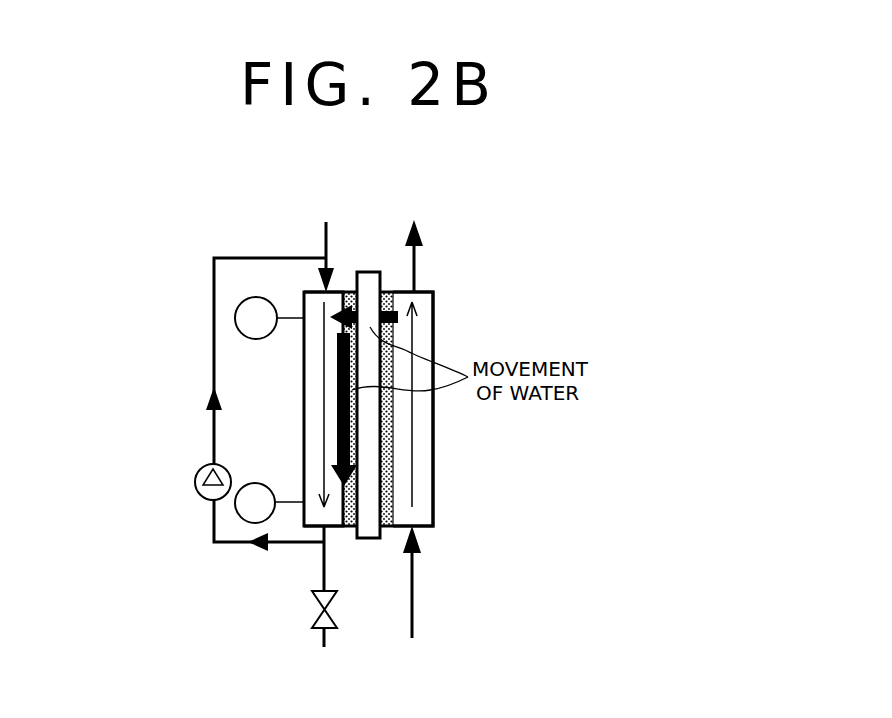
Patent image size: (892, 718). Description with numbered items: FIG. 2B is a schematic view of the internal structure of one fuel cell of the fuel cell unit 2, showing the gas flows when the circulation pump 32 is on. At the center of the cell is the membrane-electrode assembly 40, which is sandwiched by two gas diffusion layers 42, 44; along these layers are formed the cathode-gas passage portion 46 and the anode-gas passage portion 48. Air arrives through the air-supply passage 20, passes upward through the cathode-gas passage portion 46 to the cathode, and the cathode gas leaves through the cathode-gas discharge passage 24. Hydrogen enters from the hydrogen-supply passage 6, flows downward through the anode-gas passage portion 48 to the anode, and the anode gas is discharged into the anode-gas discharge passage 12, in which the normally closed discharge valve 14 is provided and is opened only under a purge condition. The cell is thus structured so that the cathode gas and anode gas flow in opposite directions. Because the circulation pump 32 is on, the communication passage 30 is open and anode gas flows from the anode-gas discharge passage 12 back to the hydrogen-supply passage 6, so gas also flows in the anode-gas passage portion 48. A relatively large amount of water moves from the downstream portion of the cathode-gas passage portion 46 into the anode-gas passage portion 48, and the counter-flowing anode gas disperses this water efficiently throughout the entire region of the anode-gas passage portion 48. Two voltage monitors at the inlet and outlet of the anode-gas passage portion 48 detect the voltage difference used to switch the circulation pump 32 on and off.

The fuel cell unit 2 is at (457, 328).
The hydrogen-supply passage 6 is at (326, 236).
The anode-gas discharge passage 12 is at (322, 562).
The discharge valve 14 is at (318, 607).
The air-supply passage 20 is at (413, 583).
The cathode-gas discharge passage 24 is at (415, 252).
The communication passage 30 is at (213, 331).
The circulation pump 32 is at (195, 481).
The membrane-electrode assembly 40 is at (368, 272).
The gas diffusion layer 42 is at (387, 292).
The gas diffusion layer 44 is at (350, 292).
The cathode-gas passage portion 46 is at (423, 450).
The anode-gas passage portion 48 is at (304, 384).